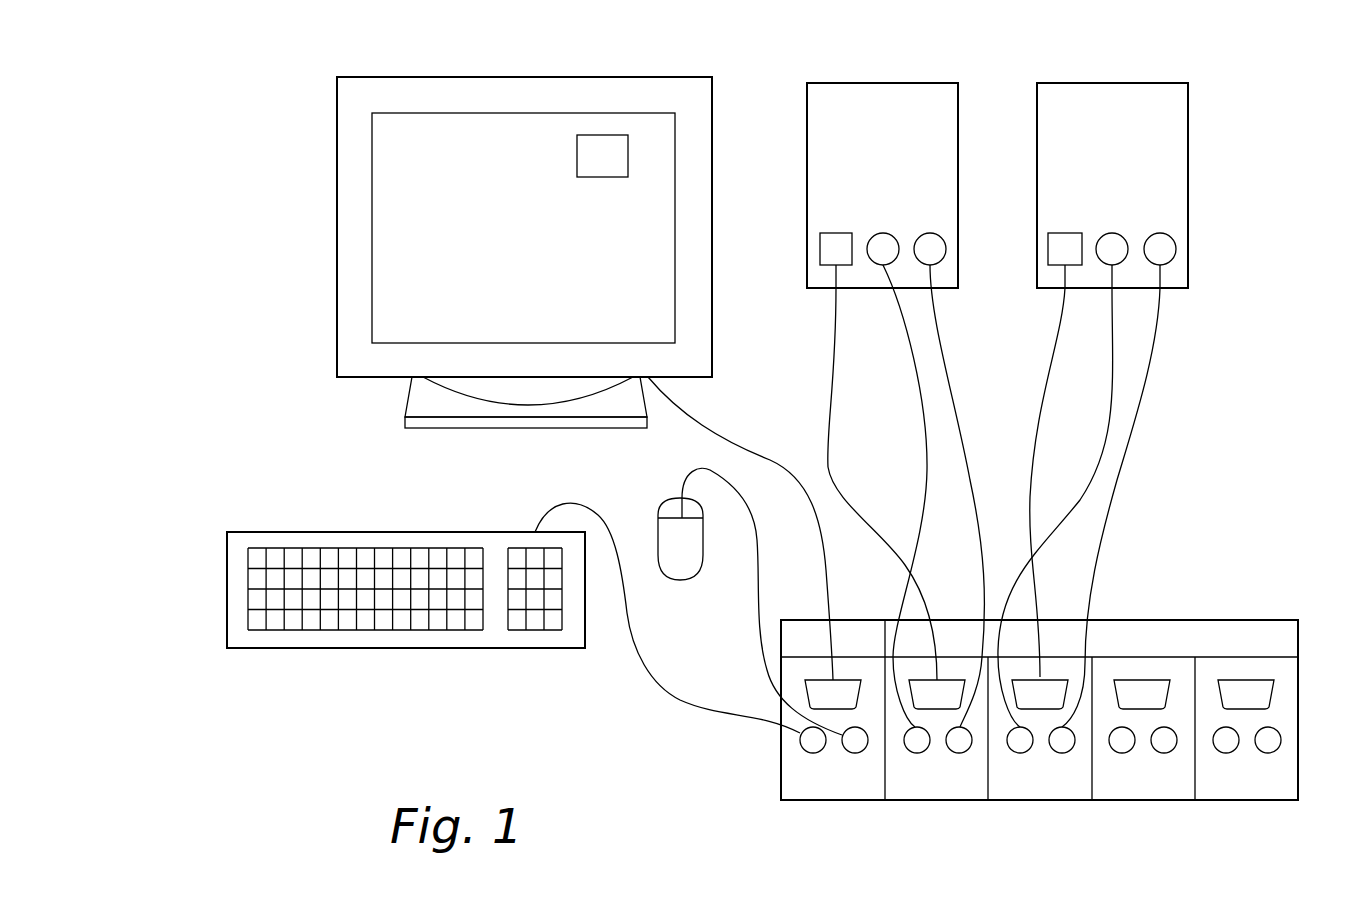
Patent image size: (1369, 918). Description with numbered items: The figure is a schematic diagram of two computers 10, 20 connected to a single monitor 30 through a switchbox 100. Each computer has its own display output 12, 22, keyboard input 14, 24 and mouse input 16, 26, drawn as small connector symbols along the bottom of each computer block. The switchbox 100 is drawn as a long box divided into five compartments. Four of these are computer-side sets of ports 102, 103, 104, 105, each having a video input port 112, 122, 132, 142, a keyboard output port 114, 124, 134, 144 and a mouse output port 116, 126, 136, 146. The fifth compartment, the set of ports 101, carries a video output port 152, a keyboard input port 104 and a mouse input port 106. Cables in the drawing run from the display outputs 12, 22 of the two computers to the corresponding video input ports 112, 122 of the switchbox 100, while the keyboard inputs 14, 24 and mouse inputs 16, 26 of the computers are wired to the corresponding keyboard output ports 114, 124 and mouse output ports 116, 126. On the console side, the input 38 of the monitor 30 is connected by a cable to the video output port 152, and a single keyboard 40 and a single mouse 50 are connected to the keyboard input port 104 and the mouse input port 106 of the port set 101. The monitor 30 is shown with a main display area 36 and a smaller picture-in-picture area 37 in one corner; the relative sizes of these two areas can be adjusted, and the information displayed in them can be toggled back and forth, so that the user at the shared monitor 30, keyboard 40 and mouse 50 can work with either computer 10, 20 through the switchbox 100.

The computer 10 is at (932, 83).
The display output 12 is at (820, 247).
The keyboard input 14 is at (882, 233).
The mouse input 16 is at (930, 233).
The computer 20 is at (1162, 83).
The display output 22 is at (1058, 233).
The keyboard input 24 is at (1114, 233).
The mouse input 26 is at (1176, 249).
The monitor 30 is at (402, 95).
The main display area 36 is at (505, 250).
The PIP area 37 is at (590, 170).
The monitor input 38 is at (738, 438).
The keyboard 40 is at (253, 530).
The mouse 50 is at (680, 580).
The switchbox 100 is at (1282, 622).
The set of ports 101 is at (929, 736).
The set of ports 102 is at (946, 737).
The set of ports 103 is at (1050, 719).
The keyboard input port 104 is at (800, 740).
The set of ports 105 is at (1281, 737).
The mouse input port 106 is at (860, 753).
The video input port 112 is at (957, 680).
The keyboard output port 114 is at (922, 753).
The mouse output port 116 is at (963, 753).
The video input port 122 is at (1060, 677).
The keyboard output port 124 is at (1025, 753).
The mouse output port 126 is at (1067, 753).
The video input port 132 is at (1142, 680).
The keyboard output port 134 is at (1130, 752).
The mouse output port 136 is at (1172, 752).
The video input port 142 is at (1245, 680).
The keyboard output port 144 is at (1233, 752).
The mouse output port 146 is at (1281, 742).
The video output port 152 is at (850, 680).